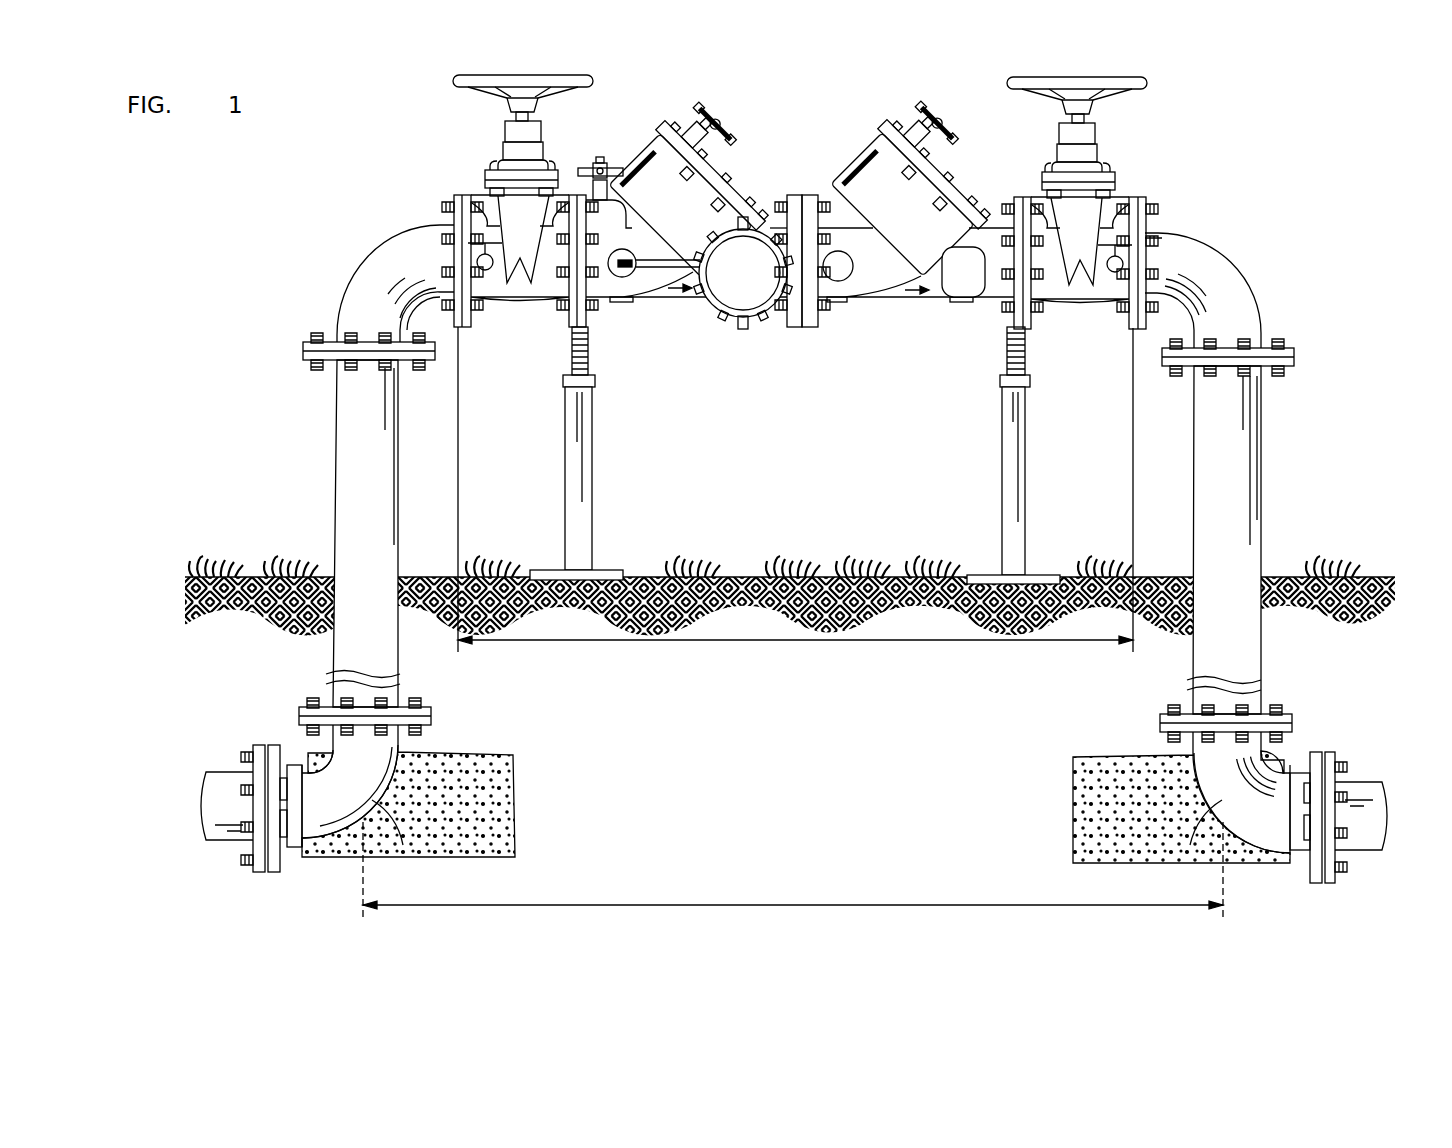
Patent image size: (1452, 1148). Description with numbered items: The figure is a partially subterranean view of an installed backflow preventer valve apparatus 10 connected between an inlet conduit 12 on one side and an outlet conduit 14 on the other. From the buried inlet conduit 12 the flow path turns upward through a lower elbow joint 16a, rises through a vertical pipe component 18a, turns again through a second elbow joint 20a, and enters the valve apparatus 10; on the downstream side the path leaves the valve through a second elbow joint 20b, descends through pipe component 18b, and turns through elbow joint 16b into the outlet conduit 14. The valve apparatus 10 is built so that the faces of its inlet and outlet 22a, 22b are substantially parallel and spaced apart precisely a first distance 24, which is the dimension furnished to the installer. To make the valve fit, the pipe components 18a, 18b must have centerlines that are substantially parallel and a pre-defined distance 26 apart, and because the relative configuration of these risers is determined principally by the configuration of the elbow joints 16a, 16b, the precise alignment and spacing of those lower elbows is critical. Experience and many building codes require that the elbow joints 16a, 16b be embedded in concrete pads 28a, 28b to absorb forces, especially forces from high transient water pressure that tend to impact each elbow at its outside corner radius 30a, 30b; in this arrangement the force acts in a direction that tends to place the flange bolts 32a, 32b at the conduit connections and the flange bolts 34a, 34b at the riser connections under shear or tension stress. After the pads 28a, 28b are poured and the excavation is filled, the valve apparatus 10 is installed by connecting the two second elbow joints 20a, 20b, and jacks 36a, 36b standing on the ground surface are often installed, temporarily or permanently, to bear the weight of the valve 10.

The backflow preventer valve apparatus 10 is at (1230, 210).
The inlet conduit 12 is at (231, 772).
The outlet conduit 14 is at (1388, 779).
The elbow joint 16a is at (357, 803).
The elbow joint 16b is at (1277, 823).
The pipe component 18a is at (385, 495).
The pipe component 18b is at (1248, 596).
The second elbow joint 20a is at (422, 274).
The second elbow joint 20b is at (1242, 312).
The inlet face of the valve 22a is at (462, 197).
The outlet face of the valve 22b is at (1140, 196).
The first distance 24 is at (688, 642).
The pre-defined distance 26 is at (735, 905).
The concrete pad 28a is at (455, 755).
The concrete pad 28b is at (1106, 761).
The outside corner radius 30a is at (403, 845).
The outside corner radius 30b is at (1190, 845).
The flange bolts 32a is at (291, 737).
The flange bolts 32b is at (1302, 752).
The flange bolts 34a is at (417, 705).
The flange bolts 34b is at (1278, 710).
The jack 36a is at (576, 477).
The jack 36b is at (999, 481).